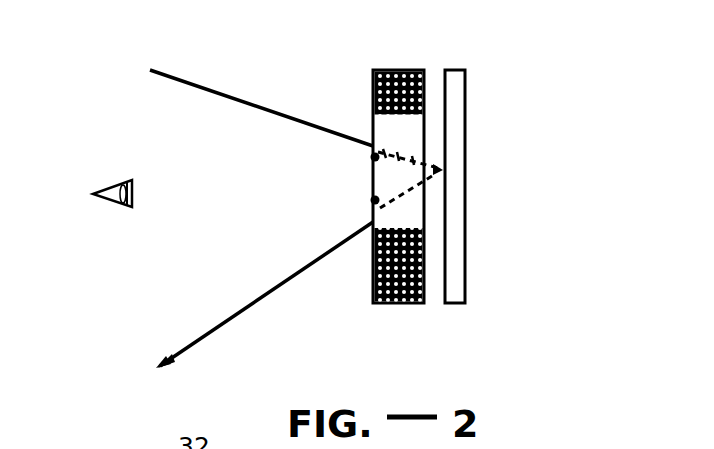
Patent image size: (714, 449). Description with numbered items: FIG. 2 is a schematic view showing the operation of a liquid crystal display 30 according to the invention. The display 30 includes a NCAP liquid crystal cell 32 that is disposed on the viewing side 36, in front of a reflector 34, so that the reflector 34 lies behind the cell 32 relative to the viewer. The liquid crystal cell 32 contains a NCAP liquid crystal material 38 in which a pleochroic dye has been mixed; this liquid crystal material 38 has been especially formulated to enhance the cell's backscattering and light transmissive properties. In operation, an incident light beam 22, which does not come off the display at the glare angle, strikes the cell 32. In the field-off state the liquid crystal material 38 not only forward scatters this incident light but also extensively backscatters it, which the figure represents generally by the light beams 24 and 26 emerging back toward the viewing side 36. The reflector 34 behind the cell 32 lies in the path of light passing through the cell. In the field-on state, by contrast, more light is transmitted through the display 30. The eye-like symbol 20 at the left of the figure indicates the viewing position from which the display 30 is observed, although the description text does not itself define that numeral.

The observer eye 20 is at (100, 188).
The light beam 22 is at (190, 82).
The light beam 24 is at (372, 157).
The light beam 26 is at (372, 201).
The display 30 is at (551, 150).
The NCAP liquid crystal cell 32 is at (397, 303).
The reflector 34 is at (465, 283).
The viewing side 36 is at (324, 18).
The NCAP liquid crystal material 38 is at (373, 88).